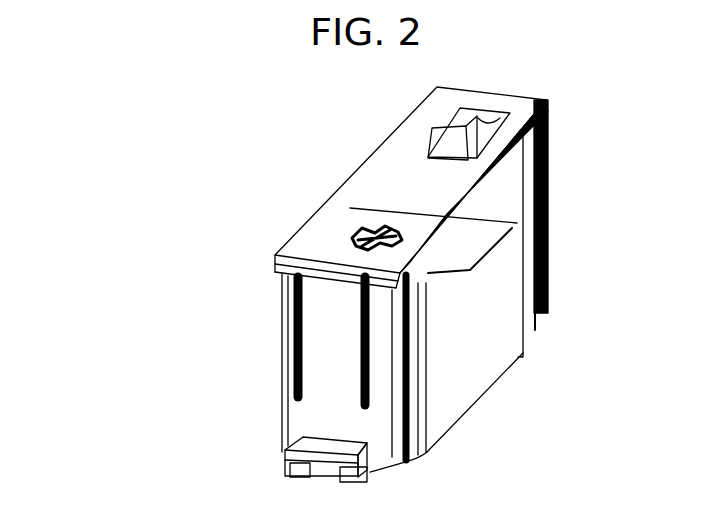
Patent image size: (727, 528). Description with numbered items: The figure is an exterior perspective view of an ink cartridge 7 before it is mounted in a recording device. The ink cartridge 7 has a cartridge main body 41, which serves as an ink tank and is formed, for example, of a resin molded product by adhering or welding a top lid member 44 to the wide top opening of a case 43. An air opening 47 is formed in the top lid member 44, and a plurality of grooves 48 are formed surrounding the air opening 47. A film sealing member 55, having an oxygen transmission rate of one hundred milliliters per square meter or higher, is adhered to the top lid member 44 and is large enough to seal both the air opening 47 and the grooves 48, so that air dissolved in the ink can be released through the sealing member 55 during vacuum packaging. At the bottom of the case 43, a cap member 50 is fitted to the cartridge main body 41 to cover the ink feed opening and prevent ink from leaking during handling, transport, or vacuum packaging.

The ink cartridge 7 is at (235, 279).
The cartridge main body 41 is at (290, 408).
The case 43 is at (335, 349).
The top lid member 44 is at (390, 173).
The air opening 47 is at (350, 208).
The grooves 48 is at (352, 229).
The cap member 50 is at (505, 284).
The sealing member 55 is at (475, 241).